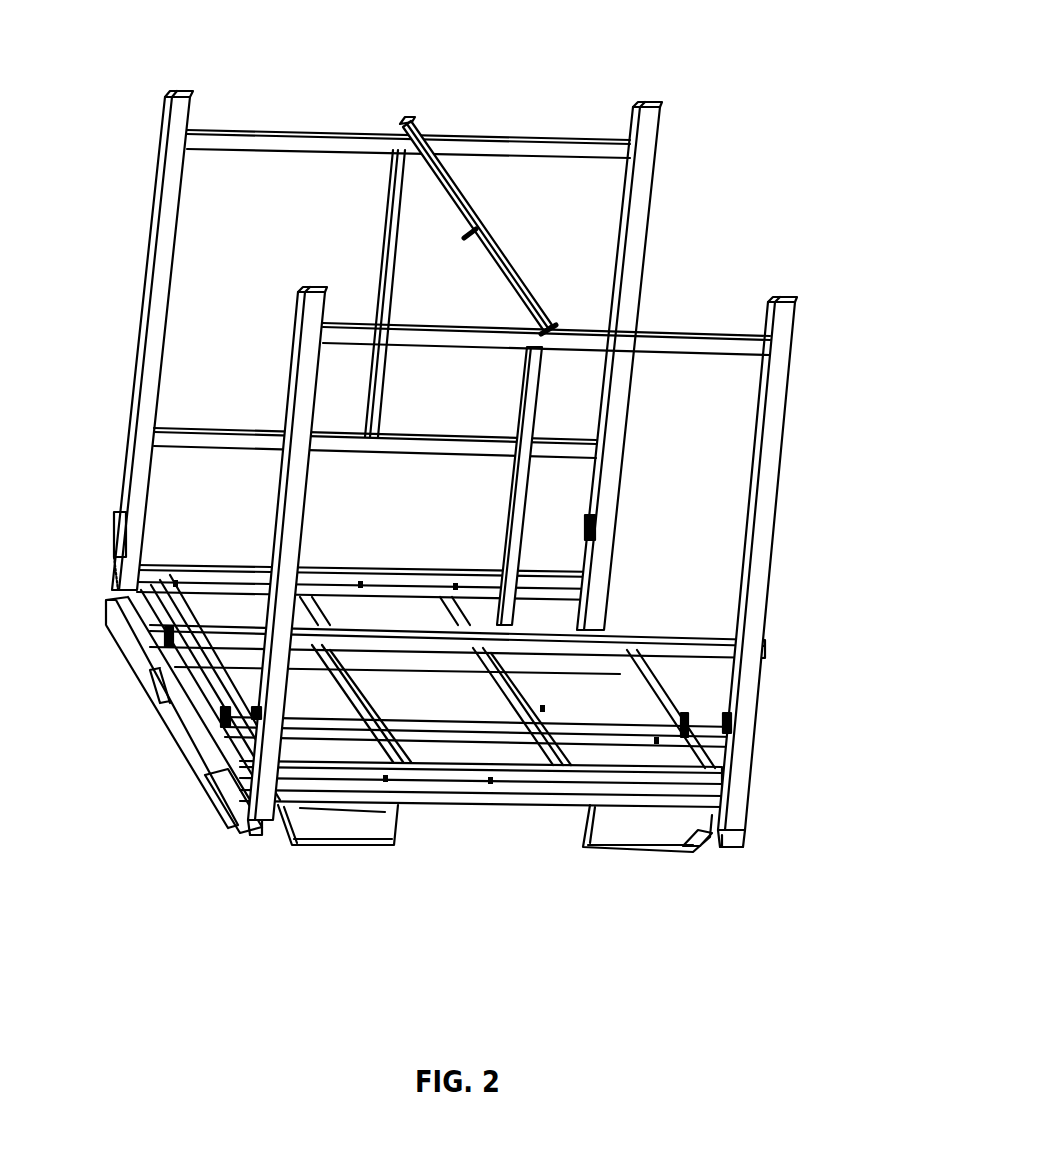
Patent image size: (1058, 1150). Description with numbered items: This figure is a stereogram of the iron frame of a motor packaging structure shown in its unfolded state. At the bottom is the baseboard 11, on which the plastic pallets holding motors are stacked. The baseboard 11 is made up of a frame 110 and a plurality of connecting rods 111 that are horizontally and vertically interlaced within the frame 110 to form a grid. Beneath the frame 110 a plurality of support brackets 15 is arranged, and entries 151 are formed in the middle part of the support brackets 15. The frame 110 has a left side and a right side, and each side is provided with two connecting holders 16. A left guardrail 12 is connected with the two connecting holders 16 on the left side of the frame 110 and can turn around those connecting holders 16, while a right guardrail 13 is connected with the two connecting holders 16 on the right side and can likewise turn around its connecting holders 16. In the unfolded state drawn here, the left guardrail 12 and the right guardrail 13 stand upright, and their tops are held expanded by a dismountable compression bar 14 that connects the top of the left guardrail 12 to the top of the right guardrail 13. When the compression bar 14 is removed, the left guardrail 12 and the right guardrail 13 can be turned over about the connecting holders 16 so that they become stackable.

The baseboard 11 is at (193, 677).
The frame 110 is at (660, 690).
The connecting rods 111 is at (570, 700).
The left guardrail 12 is at (176, 180).
The right guardrail 13 is at (777, 437).
The dismountable compression bar 14 is at (455, 185).
The support bracket 15 is at (226, 795).
The entries 151 is at (190, 717).
The connecting holders 16 is at (118, 535).